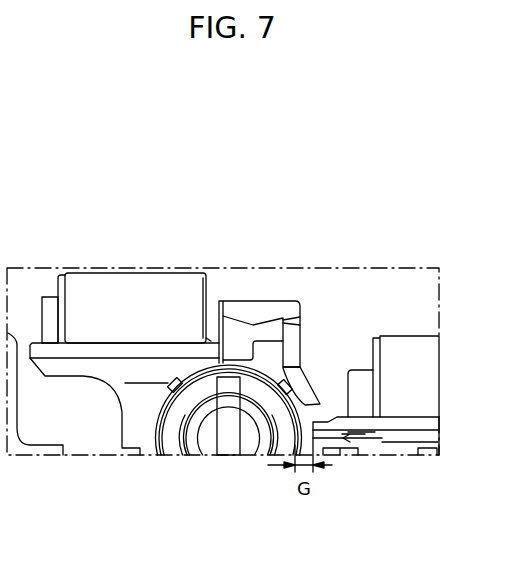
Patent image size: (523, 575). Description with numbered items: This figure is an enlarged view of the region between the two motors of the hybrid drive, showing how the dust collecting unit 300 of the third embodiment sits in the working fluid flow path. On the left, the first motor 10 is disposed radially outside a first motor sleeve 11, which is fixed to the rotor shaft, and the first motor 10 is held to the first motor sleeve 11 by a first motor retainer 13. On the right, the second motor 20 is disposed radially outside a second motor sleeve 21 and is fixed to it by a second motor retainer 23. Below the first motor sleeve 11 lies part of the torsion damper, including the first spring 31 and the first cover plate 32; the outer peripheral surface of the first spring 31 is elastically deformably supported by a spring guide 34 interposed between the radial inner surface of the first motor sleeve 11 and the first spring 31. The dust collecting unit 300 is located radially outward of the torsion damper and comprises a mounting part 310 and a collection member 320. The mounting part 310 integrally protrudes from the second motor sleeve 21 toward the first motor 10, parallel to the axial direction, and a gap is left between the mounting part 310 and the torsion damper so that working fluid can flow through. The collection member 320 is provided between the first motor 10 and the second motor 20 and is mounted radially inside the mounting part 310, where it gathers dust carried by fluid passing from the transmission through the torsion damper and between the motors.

The first motor 10 is at (180, 288).
The first motor sleeve 11 is at (112, 353).
The first motor retainer 13 is at (49, 302).
The second motor 20 is at (408, 343).
The second motor sleeve 21 is at (418, 422).
The second motor retainer 23 is at (367, 385).
The first spring 31 is at (228, 380).
The first cover plate 32 is at (283, 425).
The spring guide 34 is at (125, 384).
The dust collecting unit 300 is at (375, 494).
The mounting part 310 is at (365, 432).
The collection member 320 is at (348, 437).